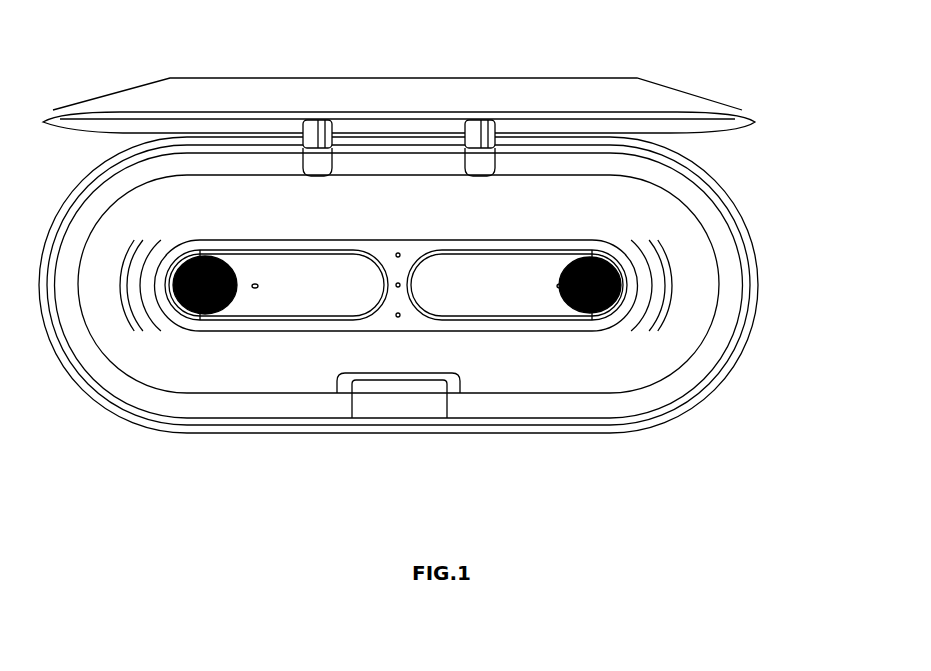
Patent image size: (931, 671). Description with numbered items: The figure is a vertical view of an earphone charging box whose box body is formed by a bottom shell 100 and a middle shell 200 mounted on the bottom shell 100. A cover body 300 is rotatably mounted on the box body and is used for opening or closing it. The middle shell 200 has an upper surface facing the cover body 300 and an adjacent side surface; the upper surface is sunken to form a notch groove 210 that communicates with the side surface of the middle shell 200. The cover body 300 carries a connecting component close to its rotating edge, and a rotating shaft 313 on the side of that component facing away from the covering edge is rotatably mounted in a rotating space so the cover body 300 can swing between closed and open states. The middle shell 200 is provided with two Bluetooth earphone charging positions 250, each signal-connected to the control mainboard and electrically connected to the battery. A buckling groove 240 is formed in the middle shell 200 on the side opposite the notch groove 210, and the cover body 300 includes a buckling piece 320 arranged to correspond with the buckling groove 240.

The bottom shell 100 is at (765, 287).
The middle shell 200 is at (737, 203).
The notch groove 210 is at (477, 160).
The buckling groove 240 is at (407, 398).
The Bluetooth earphone charging position 250 is at (627, 332).
The cover body 300 is at (675, 103).
The rotating shaft 313 is at (457, 133).
The buckling piece 320 is at (470, 138).